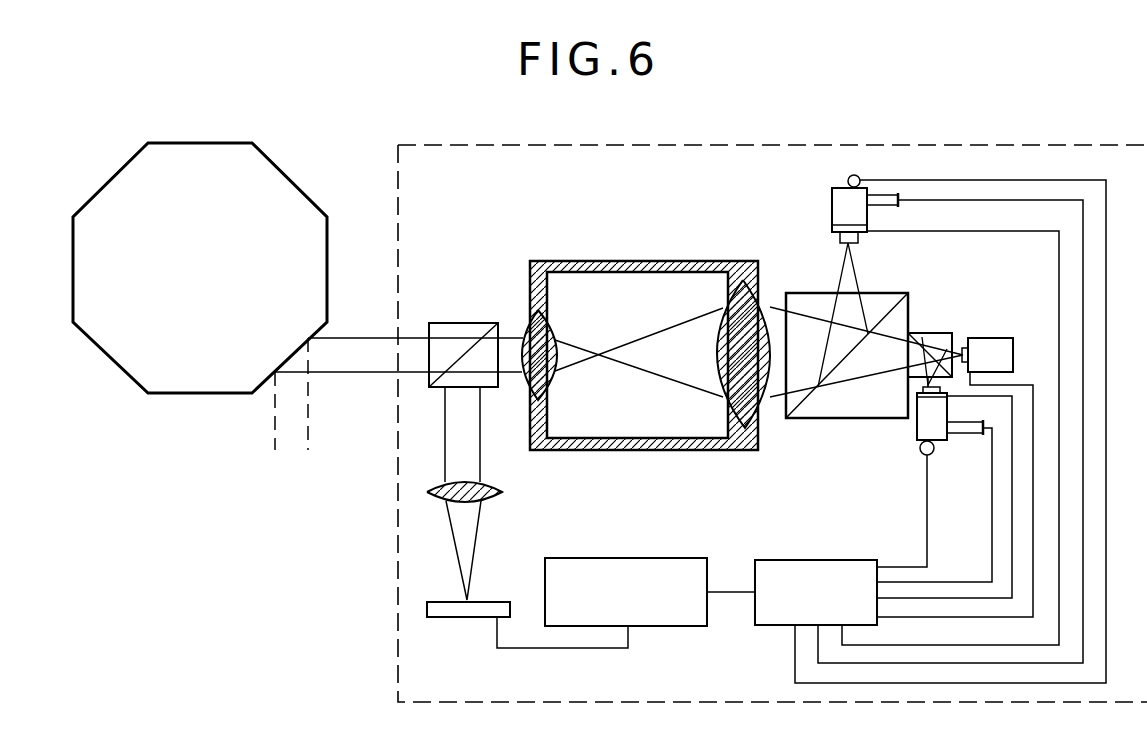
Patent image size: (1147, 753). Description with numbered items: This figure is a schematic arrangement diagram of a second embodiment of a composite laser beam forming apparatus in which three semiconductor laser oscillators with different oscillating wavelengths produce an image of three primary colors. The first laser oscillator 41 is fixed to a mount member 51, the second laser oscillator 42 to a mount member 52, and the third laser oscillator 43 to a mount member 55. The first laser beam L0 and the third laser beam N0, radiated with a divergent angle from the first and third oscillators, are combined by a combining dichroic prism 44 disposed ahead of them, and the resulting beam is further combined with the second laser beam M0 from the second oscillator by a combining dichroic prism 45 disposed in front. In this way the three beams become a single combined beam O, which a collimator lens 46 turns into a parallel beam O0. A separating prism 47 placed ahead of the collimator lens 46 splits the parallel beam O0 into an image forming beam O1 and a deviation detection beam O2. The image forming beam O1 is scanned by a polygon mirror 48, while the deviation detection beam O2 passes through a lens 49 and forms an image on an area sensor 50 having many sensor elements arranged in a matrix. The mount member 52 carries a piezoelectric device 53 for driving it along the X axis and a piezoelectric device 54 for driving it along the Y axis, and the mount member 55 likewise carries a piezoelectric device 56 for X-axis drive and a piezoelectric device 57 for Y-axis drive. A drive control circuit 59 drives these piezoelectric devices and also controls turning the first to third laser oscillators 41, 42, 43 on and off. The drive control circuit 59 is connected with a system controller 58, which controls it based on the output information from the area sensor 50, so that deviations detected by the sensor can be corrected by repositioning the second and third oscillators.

The first semiconductor laser oscillator 41 is at (966, 345).
The second semiconductor laser oscillator 42 is at (858, 238).
The third semiconductor laser oscillator 43 is at (917, 390).
The combining dichroic prism 44 is at (935, 333).
The combining dichroic prism 45 is at (803, 420).
The collimator lens 46 is at (618, 262).
The separating prism 47 is at (457, 323).
The polygon mirror 48 is at (307, 193).
The lens 49 is at (490, 500).
The area sensor 50 is at (495, 605).
The mount member 51 is at (1000, 338).
The mount member 52 is at (832, 212).
The piezoelectric device 53 is at (848, 178).
The piezoelectric device 54 is at (898, 205).
The mount member 55 is at (918, 440).
The piezoelectric device 56 is at (930, 456).
The piezoelectric device 57 is at (970, 435).
The system controller 58 is at (650, 558).
The drive control circuit 59 is at (832, 560).
The combined beam O is at (777, 322).
The parallel beam O0 is at (508, 345).
The image forming beam O1 is at (360, 350).
The deviation detection beam O2 is at (465, 428).
The second laser beam M0 is at (857, 282).
The third laser beam N0 is at (915, 385).
The first laser beam L0 is at (953, 335).